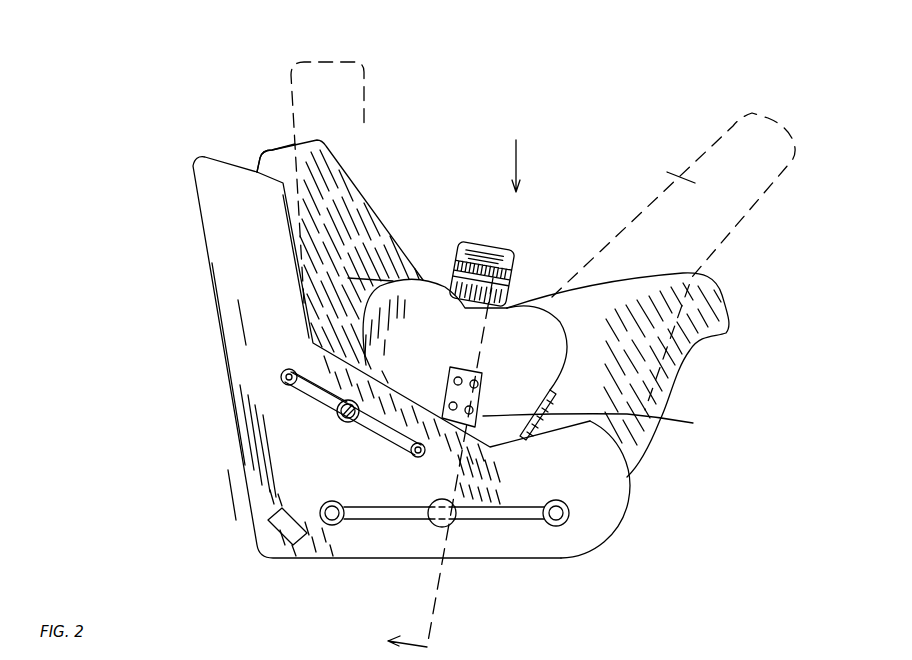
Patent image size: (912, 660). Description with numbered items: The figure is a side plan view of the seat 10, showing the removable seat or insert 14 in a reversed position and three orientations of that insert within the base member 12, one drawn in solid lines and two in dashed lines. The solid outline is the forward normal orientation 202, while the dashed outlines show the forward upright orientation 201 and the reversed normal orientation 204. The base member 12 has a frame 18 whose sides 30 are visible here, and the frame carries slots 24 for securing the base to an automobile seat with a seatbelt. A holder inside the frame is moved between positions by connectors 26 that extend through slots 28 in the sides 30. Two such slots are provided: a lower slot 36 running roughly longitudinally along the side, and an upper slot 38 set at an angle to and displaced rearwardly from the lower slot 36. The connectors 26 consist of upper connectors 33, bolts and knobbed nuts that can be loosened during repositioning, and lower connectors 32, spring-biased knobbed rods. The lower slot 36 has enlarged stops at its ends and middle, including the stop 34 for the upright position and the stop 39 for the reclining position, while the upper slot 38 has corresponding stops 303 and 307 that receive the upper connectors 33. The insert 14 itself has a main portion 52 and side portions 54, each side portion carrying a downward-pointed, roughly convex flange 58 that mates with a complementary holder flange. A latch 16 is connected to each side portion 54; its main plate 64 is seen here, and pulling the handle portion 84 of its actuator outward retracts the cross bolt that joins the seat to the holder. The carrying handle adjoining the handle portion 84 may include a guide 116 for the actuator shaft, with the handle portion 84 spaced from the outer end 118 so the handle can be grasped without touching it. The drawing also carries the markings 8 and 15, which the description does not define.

The section line 8- 8 is at (432, 463).
The seat 10 is at (514, 156).
The base member 12 is at (593, 480).
The removable seat or insert 14 is at (320, 187).
The seat shell portion 15 is at (669, 173).
The latch 16 is at (598, 423).
The frame 18 is at (355, 537).
The slots 24 is at (287, 527).
The connectors 26 is at (334, 417).
The slots 28 is at (281, 377).
The sides 30 is at (590, 505).
The lower connectors 32 is at (430, 527).
The upper connectors 33 is at (337, 413).
The stop 34 is at (320, 507).
The lower slot 36 is at (507, 525).
The upper slot 38 is at (283, 373).
The stop 39 is at (563, 527).
The main portion 52 is at (305, 168).
The side portions 54 is at (432, 323).
The flange 58 is at (558, 380).
The main plate 64 is at (483, 390).
The handle portion 84 is at (458, 268).
The guide 116 is at (511, 276).
The outer end 118 is at (487, 246).
The forward upright orientation 201 is at (348, 85).
The forward normal orientation 202 is at (280, 155).
The reversed normal orientation 204 is at (773, 132).
The stop 303 is at (338, 409).
The stop 307 is at (414, 460).